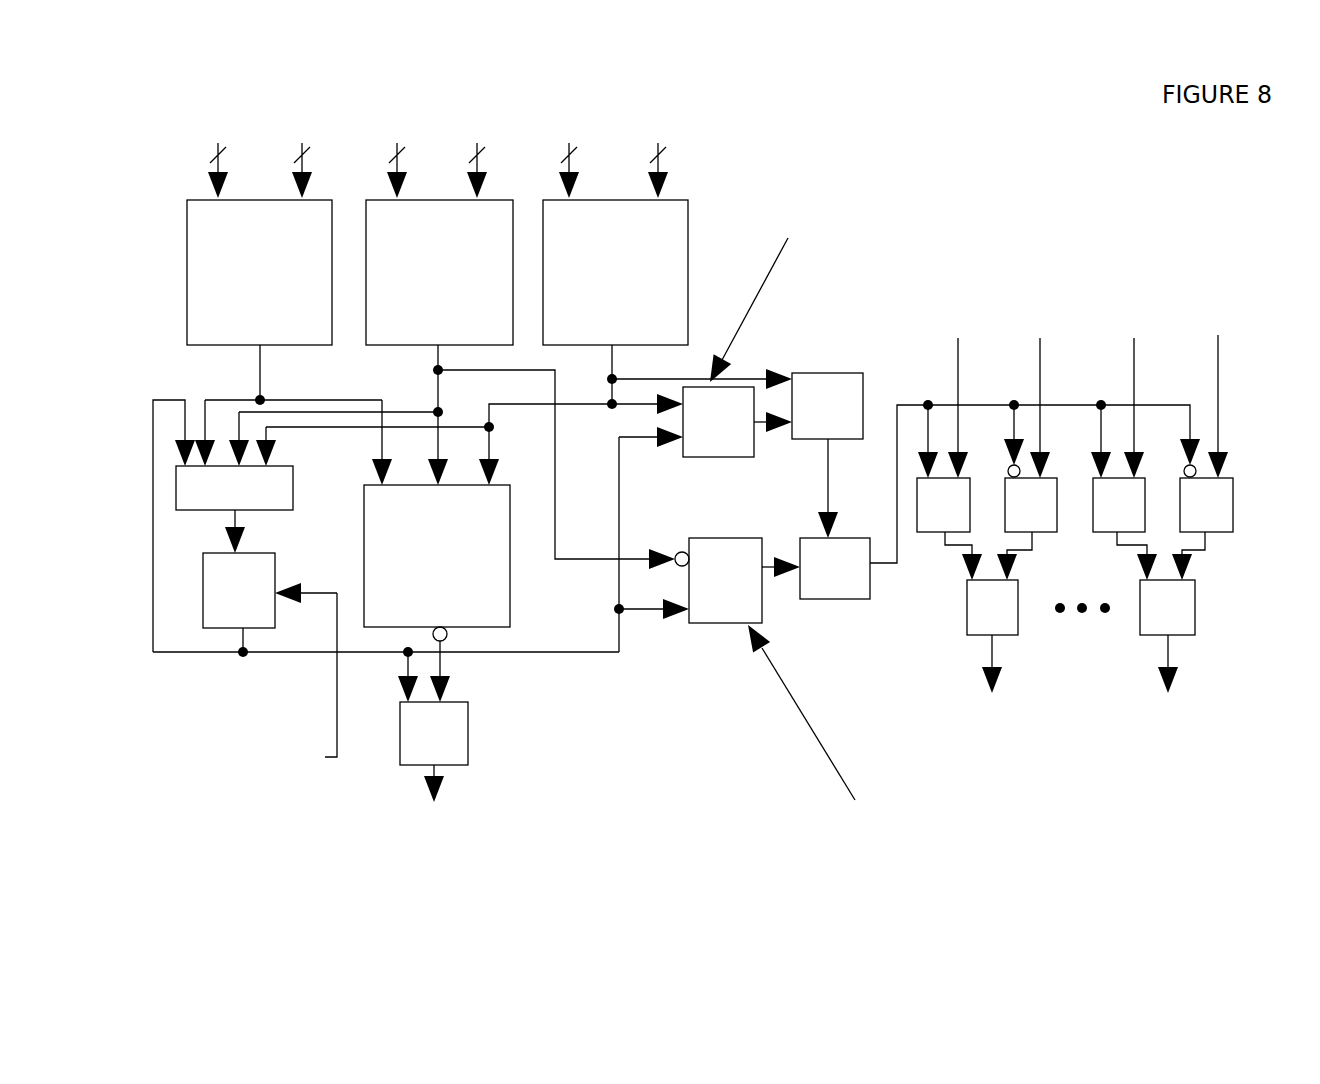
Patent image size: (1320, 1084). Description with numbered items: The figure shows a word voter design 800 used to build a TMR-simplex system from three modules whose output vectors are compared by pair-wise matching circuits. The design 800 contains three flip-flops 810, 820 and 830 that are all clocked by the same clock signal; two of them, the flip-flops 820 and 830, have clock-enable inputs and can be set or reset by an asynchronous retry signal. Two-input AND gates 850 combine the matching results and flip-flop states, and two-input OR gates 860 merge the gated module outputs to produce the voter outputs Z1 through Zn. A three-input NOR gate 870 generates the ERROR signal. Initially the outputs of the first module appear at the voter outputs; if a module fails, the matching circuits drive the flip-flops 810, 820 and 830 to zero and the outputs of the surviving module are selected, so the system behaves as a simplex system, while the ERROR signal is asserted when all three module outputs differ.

The word voter design 800 is at (275, 901).
The flip-flop 810 is at (265, 628).
The flip-flop 820 is at (743, 386).
The flip-flop 830 is at (716, 623).
The two-input AND gate 850 is at (293, 483).
The two-input OR gate 860 is at (843, 600).
The three-input NOR gate 870 is at (510, 570).